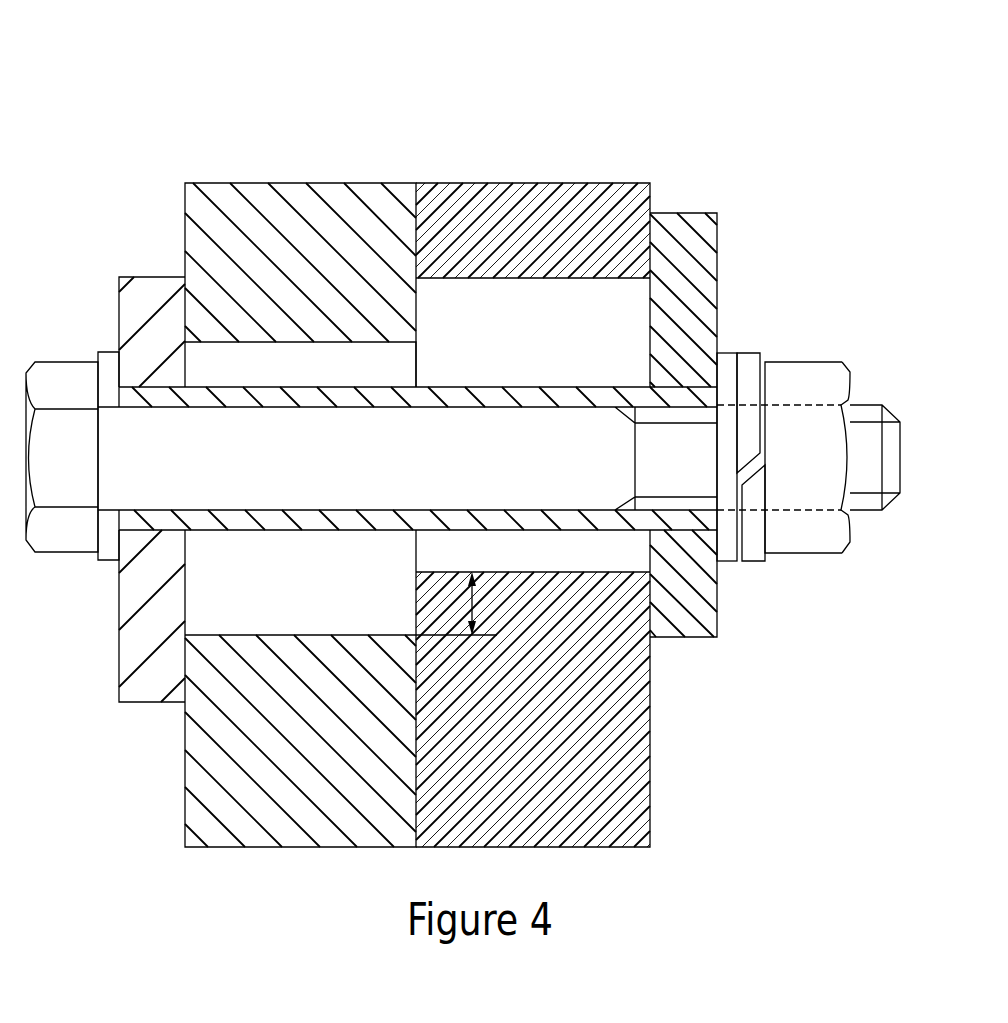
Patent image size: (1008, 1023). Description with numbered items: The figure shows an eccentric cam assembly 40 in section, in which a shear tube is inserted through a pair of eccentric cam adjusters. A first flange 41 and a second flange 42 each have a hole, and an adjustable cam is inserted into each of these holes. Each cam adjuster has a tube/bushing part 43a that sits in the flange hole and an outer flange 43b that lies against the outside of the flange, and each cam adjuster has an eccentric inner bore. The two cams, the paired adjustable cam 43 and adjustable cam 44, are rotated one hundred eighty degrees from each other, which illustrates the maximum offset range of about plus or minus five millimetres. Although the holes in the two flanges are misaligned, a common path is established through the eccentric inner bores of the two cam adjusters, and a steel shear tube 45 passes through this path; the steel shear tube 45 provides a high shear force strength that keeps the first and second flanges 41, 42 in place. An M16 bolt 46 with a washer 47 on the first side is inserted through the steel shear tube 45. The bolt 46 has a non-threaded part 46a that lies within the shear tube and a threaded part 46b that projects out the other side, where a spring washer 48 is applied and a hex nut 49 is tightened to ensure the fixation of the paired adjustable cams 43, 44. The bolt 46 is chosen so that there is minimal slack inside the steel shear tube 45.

The fastening assembly 40 is at (91, 101).
The first flange 41 is at (267, 197).
The second flange 42 is at (527, 195).
The adjustable cam 43 is at (163, 292).
The tube/bushing part 43a is at (325, 352).
The outer flange 43b is at (142, 688).
The adjustable cam 44 is at (703, 235).
The steel shear tube 45 is at (160, 393).
The M16 bolt 46 is at (60, 373).
The non-threaded part 46a is at (342, 468).
The threaded part 46b is at (666, 416).
The washer 47 is at (105, 558).
The spring washer 48 is at (748, 362).
The hex nut 49 is at (823, 375).